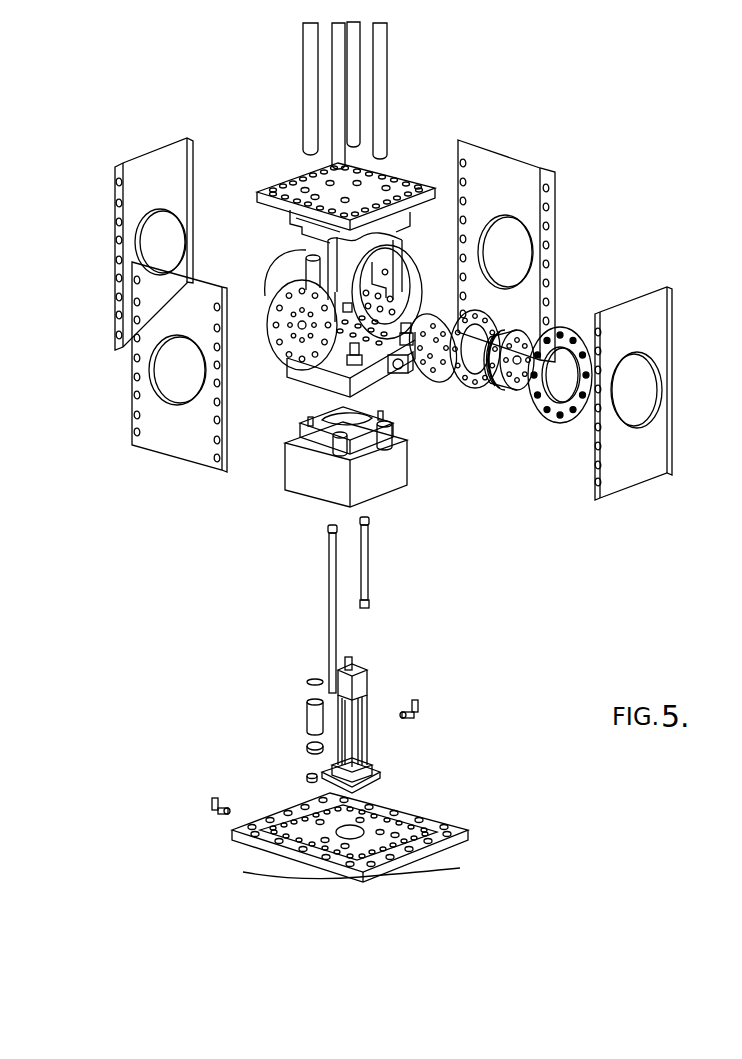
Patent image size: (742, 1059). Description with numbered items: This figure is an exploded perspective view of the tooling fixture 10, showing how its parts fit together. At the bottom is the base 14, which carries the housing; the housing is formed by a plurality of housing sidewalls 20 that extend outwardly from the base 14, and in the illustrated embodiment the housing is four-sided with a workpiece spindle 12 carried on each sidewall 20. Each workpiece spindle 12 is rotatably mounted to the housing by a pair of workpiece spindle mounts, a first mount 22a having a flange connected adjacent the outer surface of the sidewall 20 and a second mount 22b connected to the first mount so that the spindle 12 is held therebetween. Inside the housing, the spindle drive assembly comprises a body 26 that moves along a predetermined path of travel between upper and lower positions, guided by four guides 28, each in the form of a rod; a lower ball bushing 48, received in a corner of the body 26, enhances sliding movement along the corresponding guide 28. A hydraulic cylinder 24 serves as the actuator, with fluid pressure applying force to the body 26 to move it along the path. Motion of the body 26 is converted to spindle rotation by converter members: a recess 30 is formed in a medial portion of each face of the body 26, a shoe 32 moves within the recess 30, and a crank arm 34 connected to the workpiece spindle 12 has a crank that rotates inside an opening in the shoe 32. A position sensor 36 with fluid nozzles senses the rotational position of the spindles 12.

The tooling fixture 10 is at (580, 90).
The workpiece spindle 12 is at (507, 392).
The base 14 is at (432, 815).
The housing sidewall 20 is at (133, 158).
The first workpiece spindle mount 22a is at (470, 388).
The second workpiece spindle mount 22b is at (557, 420).
The hydraulic cylinder 24 is at (388, 670).
The body 26 is at (296, 494).
The guide 28 is at (332, 59).
The recess 30 is at (383, 378).
The shoe 32 is at (410, 376).
The crank arm 34 is at (437, 380).
The position sensor 36 is at (395, 275).
The ball bushing 48 is at (305, 721).